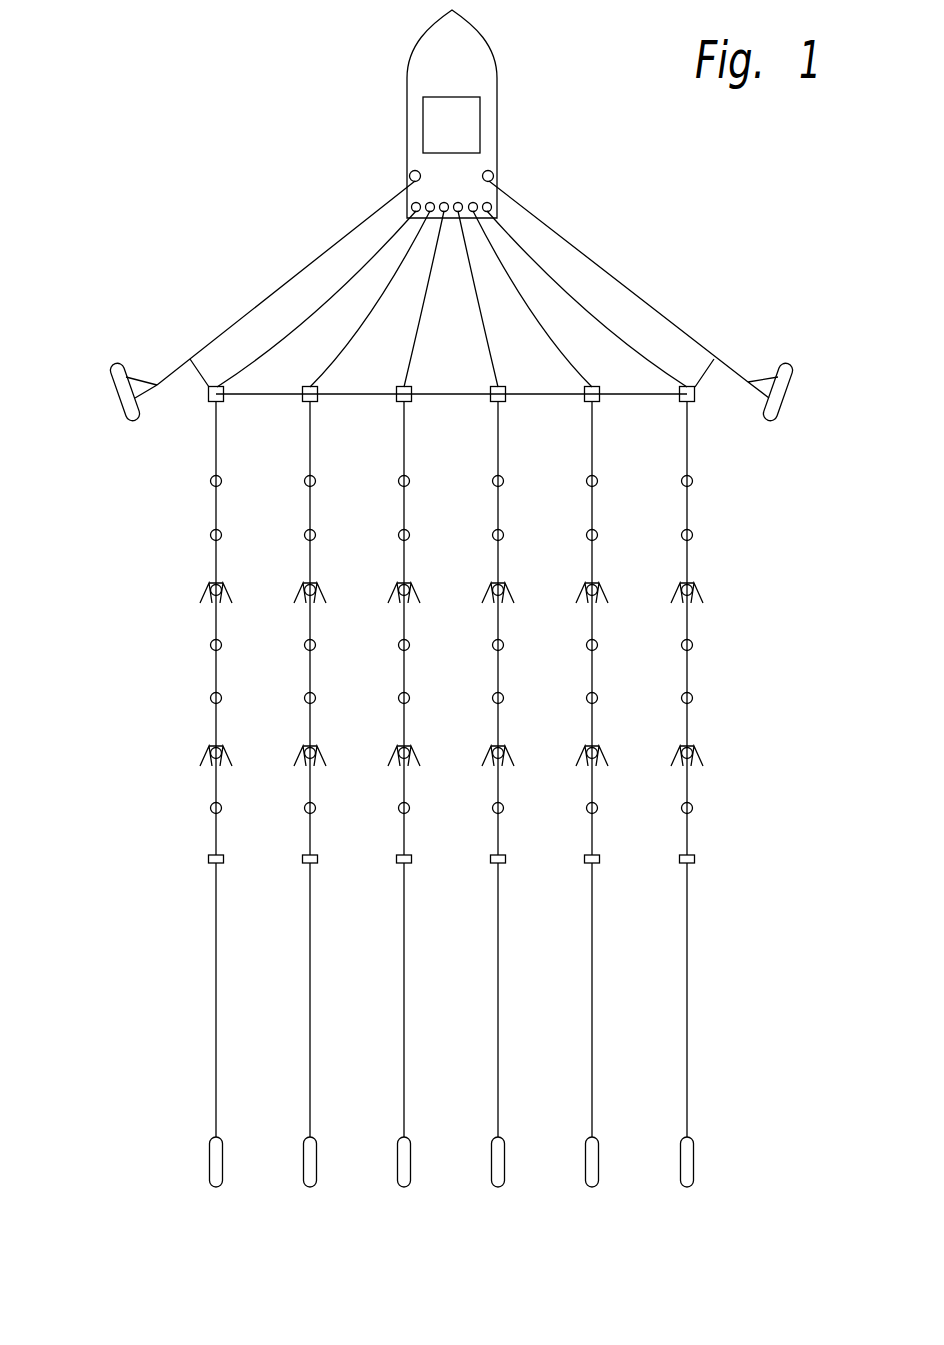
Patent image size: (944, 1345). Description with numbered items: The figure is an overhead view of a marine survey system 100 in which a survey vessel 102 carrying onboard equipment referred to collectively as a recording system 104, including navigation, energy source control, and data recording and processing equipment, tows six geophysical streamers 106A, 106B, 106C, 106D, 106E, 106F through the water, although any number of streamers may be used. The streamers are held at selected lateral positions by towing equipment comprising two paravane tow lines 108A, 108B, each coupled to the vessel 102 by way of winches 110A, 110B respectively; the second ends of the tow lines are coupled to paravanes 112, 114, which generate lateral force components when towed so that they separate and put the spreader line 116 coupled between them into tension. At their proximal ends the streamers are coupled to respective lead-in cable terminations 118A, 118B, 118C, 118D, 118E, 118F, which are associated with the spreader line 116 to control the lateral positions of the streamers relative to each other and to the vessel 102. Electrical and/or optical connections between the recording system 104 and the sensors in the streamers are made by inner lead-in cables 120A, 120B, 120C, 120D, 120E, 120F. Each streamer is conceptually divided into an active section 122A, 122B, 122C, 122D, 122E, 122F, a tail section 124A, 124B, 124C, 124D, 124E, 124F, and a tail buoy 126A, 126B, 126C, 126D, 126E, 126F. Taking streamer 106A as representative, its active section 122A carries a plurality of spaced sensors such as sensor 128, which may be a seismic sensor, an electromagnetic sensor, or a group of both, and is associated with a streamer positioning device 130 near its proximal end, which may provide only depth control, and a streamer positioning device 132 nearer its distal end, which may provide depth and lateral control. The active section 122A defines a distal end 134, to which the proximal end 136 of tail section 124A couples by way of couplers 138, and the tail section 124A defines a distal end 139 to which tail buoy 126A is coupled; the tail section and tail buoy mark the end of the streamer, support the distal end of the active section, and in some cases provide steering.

The marine survey system 100 is at (180, 143).
The survey vessel 102 is at (413, 63).
The recording system 104 is at (452, 97).
The geophysical streamer 106A is at (216, 1218).
The geophysical streamer 106B is at (310, 1218).
The geophysical streamer 106C is at (404, 1218).
The geophysical streamer 106D is at (498, 1218).
The geophysical streamer 106E is at (592, 1218).
The geophysical streamer 106F is at (687, 1218).
The paravane tow line 108A is at (380, 211).
The paravane tow line 108B is at (524, 212).
The winch 110A is at (410, 173).
The winch 110B is at (494, 173).
The paravane 112 is at (110, 395).
The paravane 114 is at (793, 396).
The spreader line 116 is at (433, 400).
The lead-in cable termination 118A is at (209, 403).
The lead-in cable termination 118B is at (303, 403).
The lead-in cable termination 118C is at (397, 403).
The lead-in cable termination 118D is at (506, 403).
The lead-in cable termination 118E is at (600, 403).
The lead-in cable termination 118F is at (695, 403).
The inner lead-in cable 120A is at (380, 250).
The inner lead-in cable 120B is at (387, 290).
The inner lead-in cable 120C is at (413, 353).
The inner lead-in cable 120D is at (491, 353).
The inner lead-in cable 120E is at (517, 290).
The inner lead-in cable 120F is at (524, 250).
The active section 122A is at (181, 608).
The active section 122B is at (309, 667).
The active section 122C is at (403, 667).
The active section 122D is at (499, 667).
The active section 122E is at (593, 667).
The active section 122F is at (688, 667).
The tail section 124A is at (215, 983).
The tail section 124B is at (309, 983).
The tail section 124C is at (403, 983).
The tail section 124D is at (499, 983).
The tail section 124E is at (593, 983).
The tail section 124F is at (688, 983).
The tail buoy 126A is at (210, 1162).
The tail buoy 126B is at (304, 1162).
The tail buoy 126C is at (398, 1162).
The tail buoy 126D is at (504, 1162).
The tail buoy 126E is at (598, 1162).
The tail buoy 126F is at (693, 1162).
The sensor 128 is at (210, 482).
The streamer positioning device 130 is at (204, 593).
The streamer positioning device 132 is at (203, 757).
The distal end of active section 134 is at (208, 834).
The proximal end of tail section 136 is at (207, 875).
The coupler 138 is at (208, 858).
The distal end of tail section 139 is at (210, 1123).